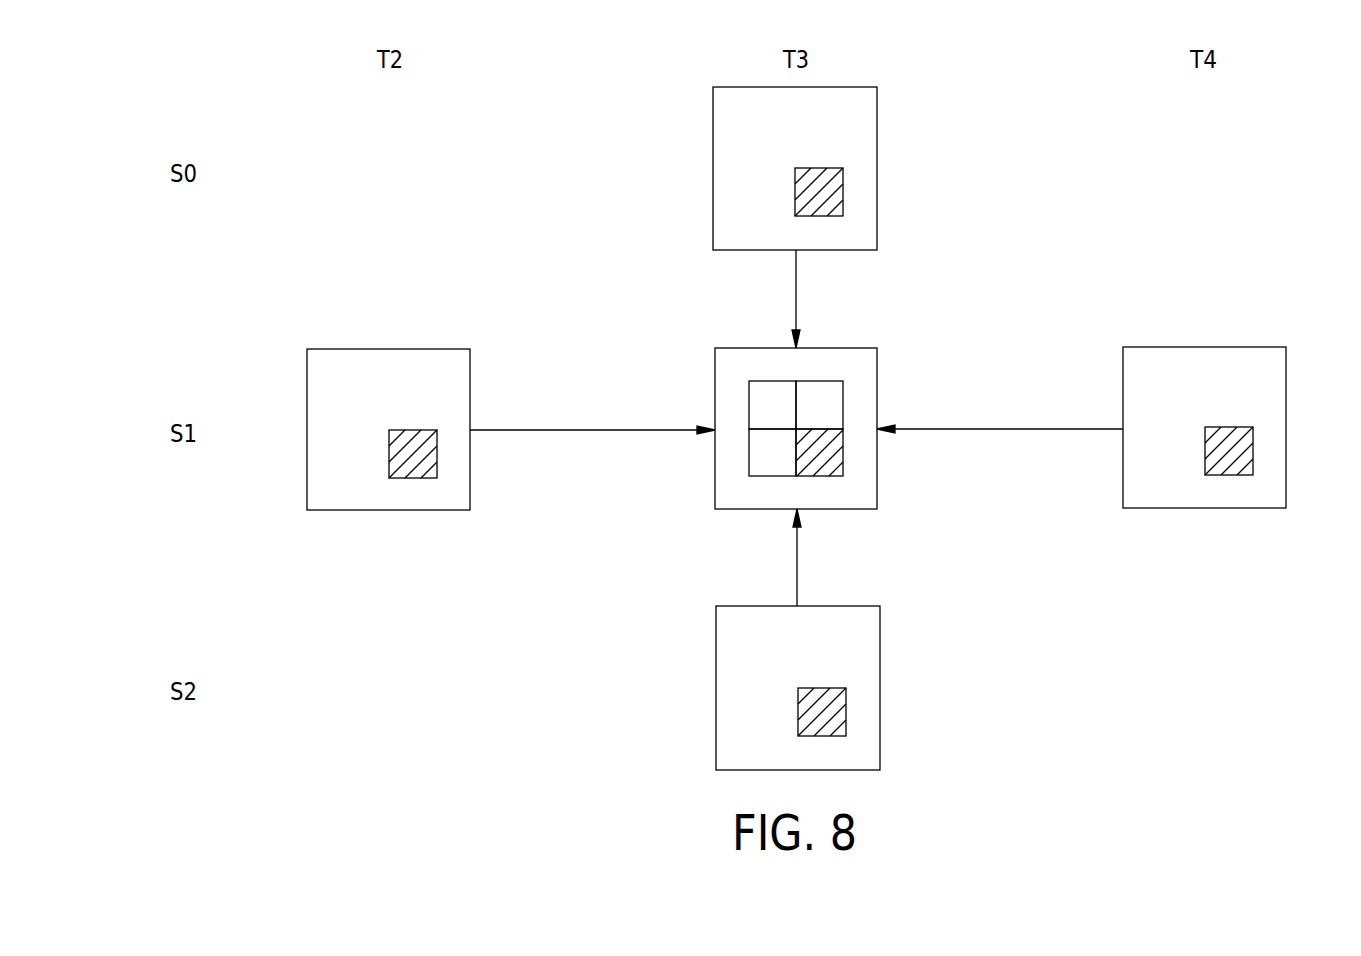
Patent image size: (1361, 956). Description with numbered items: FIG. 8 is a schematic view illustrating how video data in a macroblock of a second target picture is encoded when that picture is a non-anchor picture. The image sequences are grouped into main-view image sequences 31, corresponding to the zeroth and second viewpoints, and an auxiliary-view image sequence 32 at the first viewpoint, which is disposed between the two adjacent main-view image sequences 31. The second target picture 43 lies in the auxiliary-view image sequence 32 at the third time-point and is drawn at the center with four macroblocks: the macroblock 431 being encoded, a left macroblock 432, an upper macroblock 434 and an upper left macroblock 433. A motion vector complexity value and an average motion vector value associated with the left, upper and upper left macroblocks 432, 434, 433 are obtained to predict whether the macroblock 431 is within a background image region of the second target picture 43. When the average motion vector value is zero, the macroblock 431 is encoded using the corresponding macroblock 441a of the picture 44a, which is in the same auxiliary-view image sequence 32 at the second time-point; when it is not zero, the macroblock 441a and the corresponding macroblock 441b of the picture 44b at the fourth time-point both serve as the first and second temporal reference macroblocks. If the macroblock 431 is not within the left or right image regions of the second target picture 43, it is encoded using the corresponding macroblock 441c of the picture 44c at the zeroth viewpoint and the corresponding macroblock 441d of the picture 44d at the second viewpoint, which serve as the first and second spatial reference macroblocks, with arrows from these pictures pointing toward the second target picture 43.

The main-view image sequence 31 is at (290, 104).
The auxiliary-view image sequence 32 is at (290, 364).
The second target picture 43 is at (877, 470).
The macroblock 431 is at (820, 476).
The left macroblock 432 is at (772, 476).
The upper left macroblock 433 is at (772, 381).
The upper macroblock 434 is at (820, 381).
The picture 44a is at (470, 388).
The picture 44b is at (1286, 463).
The picture 44c is at (877, 130).
The picture 44d is at (880, 648).
The macroblock 441a is at (414, 430).
The macroblock 441b is at (1228, 427).
The macroblock 441c is at (843, 190).
The macroblock 441d is at (846, 710).